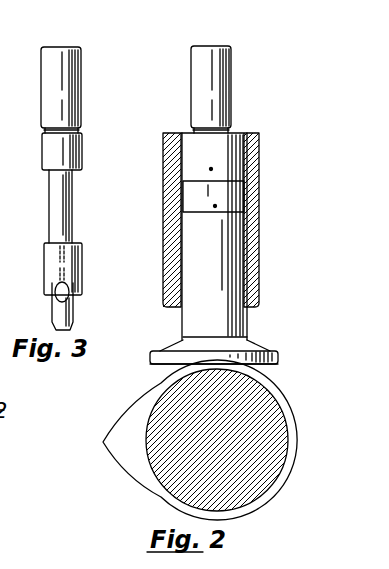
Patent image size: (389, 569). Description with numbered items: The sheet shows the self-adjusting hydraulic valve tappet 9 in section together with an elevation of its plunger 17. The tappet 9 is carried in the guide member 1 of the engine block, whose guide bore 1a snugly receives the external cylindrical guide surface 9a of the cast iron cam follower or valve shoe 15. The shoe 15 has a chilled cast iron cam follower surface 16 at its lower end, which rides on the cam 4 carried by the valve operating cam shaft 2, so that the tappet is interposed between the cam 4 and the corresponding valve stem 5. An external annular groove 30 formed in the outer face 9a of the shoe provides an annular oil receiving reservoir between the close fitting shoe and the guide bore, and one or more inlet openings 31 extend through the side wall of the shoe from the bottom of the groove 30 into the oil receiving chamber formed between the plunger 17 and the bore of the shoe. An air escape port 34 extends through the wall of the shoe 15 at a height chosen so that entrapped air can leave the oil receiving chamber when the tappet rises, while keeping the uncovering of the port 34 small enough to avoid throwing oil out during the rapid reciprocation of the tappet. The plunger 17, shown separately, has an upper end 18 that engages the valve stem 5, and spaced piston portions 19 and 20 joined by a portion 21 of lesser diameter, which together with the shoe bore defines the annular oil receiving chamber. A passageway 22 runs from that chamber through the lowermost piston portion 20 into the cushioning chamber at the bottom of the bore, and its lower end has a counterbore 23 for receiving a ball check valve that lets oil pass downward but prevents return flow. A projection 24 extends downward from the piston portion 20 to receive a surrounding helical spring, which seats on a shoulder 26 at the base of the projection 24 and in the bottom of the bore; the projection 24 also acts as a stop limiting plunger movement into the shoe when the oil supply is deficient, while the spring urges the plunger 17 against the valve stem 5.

In FIG. 2, the guide member 1 is at (165, 238).
In FIG. 2, the guide bore 1a is at (182, 192).
In FIG. 2, the valve operating cam shaft 2 is at (160, 406).
In FIG. 2, the cam 4 is at (104, 435).
In FIG. 2, the valve stem 5 is at (130, 560).
In FIG. 2, the slack adjusting valve tappet 9 is at (183, 131).
In FIG. 2, the external cylindrical guide surface 9a is at (183, 328).
In FIG. 2, the valve shoe 15 is at (276, 356).
In FIG. 2, the cam follower surface 16 is at (272, 363).
In FIG. 3, the plunger 17 is at (82, 148).
In FIG. 3, the upper end of the plunger 18 is at (70, 47).
In FIG. 2, the upper end of the plunger 18 is at (221, 46).
In FIG. 3, the piston portion 19 is at (43, 158).
In FIG. 3, the lowermost piston portion 20 is at (46, 261).
In FIG. 3, the connecting portion 21 is at (73, 221).
In FIG. 3, the passageway 22 is at (72, 275).
In FIG. 3, the counterbore 23 is at (56, 298).
In FIG. 3, the projection 24 is at (74, 315).
In FIG. 3, the shoulder 26 is at (78, 297).
In FIG. 2, the external annular groove 30 is at (244, 188).
In FIG. 2, the inlet opening 31 is at (216, 206).
In FIG. 2, the air escape port 34 is at (209, 168).